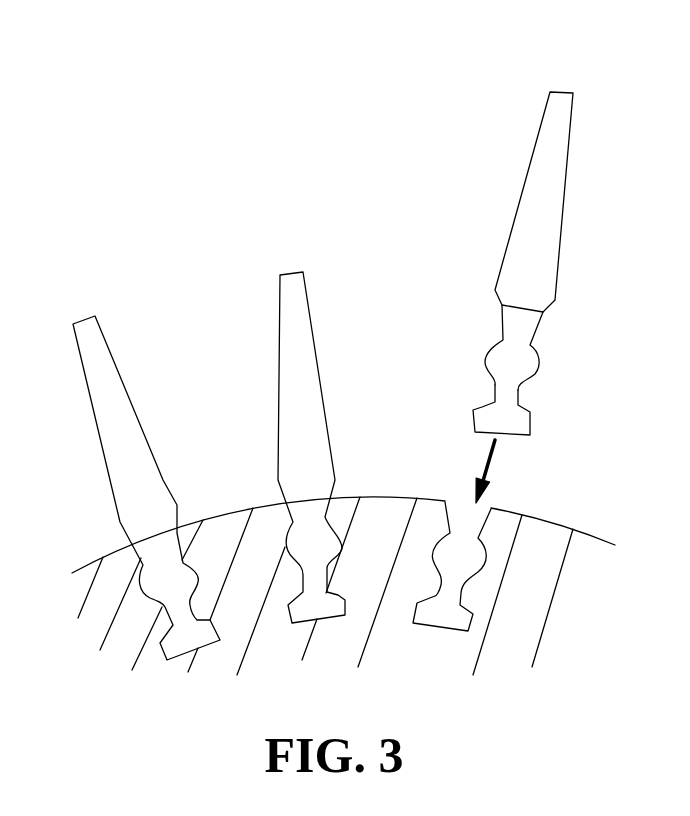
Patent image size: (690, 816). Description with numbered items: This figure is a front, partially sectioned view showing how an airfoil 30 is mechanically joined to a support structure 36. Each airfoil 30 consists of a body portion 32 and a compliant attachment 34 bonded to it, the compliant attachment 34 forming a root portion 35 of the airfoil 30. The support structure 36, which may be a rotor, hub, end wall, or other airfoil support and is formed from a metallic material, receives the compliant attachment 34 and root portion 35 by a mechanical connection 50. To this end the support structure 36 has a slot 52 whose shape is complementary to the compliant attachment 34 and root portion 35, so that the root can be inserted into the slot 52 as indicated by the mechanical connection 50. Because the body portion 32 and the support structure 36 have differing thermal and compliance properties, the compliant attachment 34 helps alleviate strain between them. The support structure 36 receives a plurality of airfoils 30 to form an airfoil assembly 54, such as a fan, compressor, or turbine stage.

The airfoil 30 is at (95, 303).
The body portion 32 is at (543, 220).
The compliant attachment 34 is at (518, 358).
The root portion 35 is at (512, 378).
The support structure 36 is at (537, 548).
The mechanical connection 50 is at (488, 453).
The slot 52 is at (465, 588).
The airfoil assembly 54 is at (170, 163).